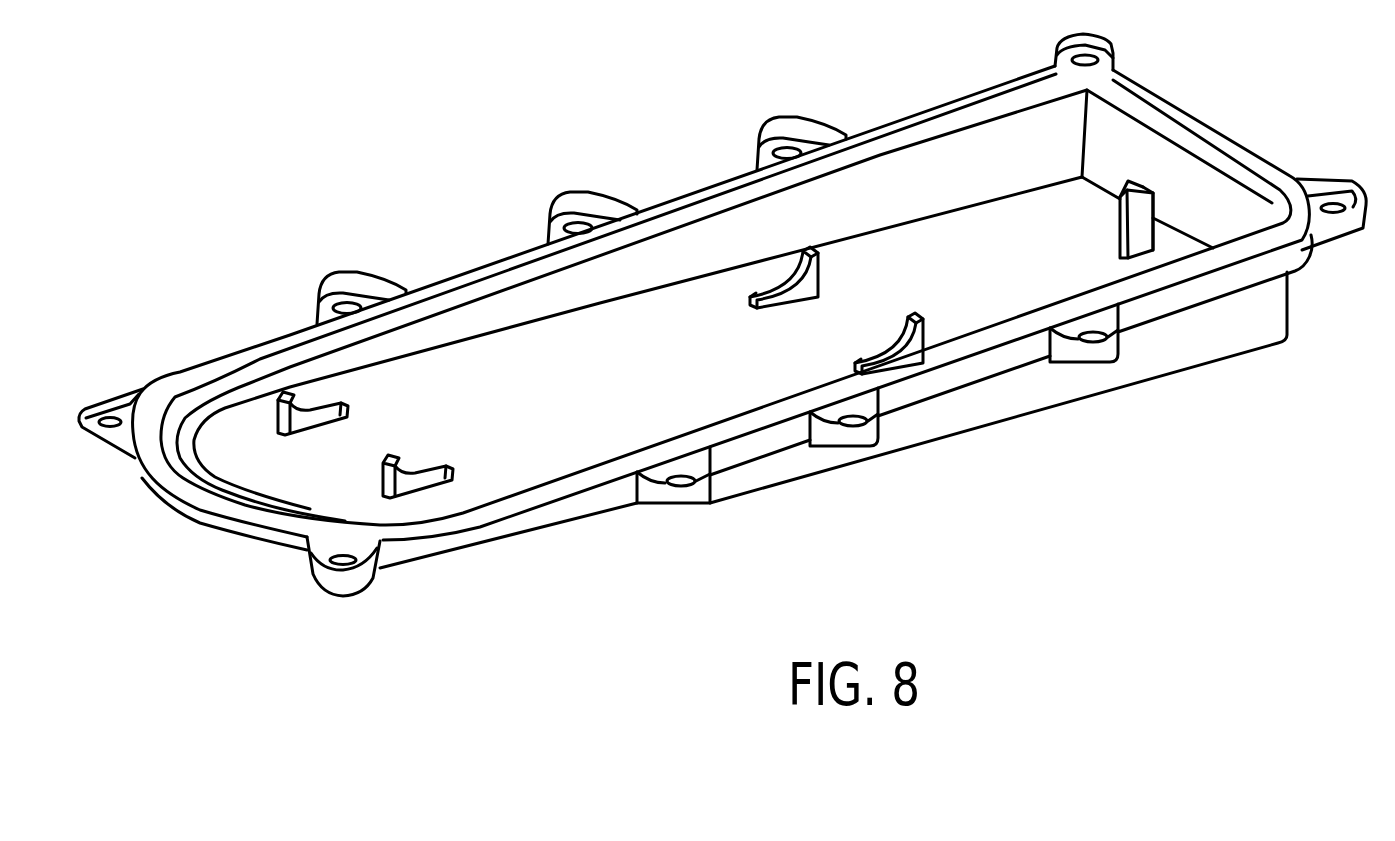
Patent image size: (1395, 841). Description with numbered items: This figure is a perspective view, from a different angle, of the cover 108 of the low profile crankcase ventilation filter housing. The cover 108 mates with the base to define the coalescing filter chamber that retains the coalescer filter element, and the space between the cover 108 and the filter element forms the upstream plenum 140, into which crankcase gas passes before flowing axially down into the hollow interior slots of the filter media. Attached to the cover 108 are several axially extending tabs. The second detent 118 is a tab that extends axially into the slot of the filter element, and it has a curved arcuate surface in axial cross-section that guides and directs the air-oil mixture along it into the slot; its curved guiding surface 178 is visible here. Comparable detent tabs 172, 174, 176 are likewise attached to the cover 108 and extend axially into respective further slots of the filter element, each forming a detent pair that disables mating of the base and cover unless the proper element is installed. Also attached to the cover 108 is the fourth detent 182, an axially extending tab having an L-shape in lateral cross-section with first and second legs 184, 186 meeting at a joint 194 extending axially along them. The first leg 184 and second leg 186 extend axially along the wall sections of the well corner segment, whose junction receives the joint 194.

The cover 108 is at (188, 496).
The upstream plenum 140 is at (610, 383).
The detent tab 172 is at (274, 418).
The second detent 118 is at (381, 449).
The hook arm 178 is at (420, 467).
The detent tab 176 is at (818, 272).
The detent tab 174 is at (926, 335).
The second leg 186 is at (1198, 143).
The first leg 184 is at (1133, 189).
The fourth detent 182 is at (1148, 179).
The joint 194 is at (1157, 203).